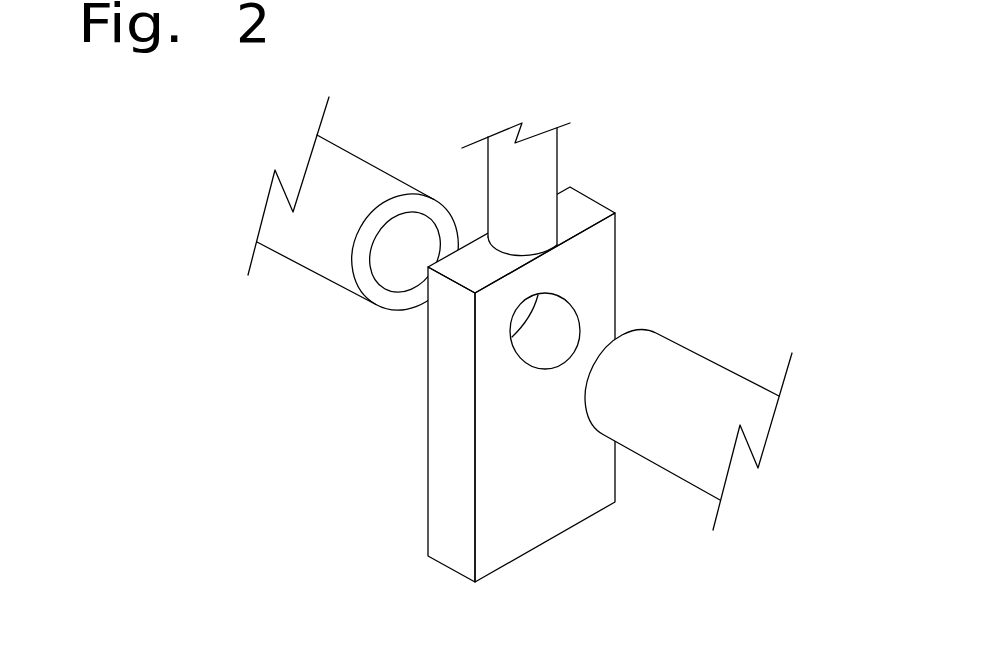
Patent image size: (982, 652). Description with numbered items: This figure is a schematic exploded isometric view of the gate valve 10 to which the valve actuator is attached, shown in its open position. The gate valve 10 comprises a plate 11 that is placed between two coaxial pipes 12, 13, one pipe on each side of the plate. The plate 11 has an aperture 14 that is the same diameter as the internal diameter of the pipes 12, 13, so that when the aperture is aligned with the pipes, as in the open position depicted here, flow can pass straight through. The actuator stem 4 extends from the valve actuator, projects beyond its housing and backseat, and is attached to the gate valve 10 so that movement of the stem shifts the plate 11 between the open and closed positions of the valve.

The gate valve 10 is at (780, 82).
The plate 11 is at (476, 419).
The pipe 12 is at (346, 230).
The pipe 13 is at (688, 451).
The actuator stem 4 is at (556, 167).
The aperture 14 is at (614, 283).